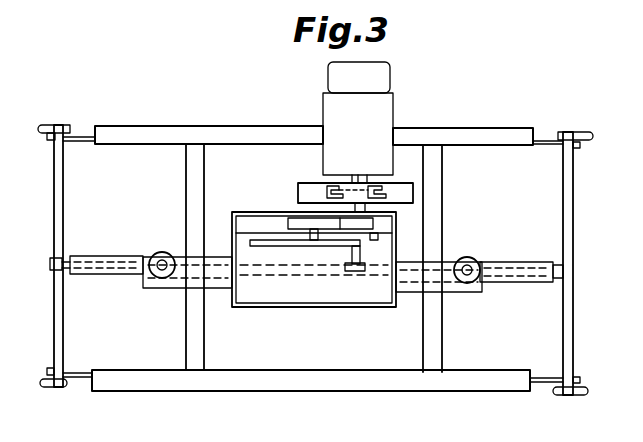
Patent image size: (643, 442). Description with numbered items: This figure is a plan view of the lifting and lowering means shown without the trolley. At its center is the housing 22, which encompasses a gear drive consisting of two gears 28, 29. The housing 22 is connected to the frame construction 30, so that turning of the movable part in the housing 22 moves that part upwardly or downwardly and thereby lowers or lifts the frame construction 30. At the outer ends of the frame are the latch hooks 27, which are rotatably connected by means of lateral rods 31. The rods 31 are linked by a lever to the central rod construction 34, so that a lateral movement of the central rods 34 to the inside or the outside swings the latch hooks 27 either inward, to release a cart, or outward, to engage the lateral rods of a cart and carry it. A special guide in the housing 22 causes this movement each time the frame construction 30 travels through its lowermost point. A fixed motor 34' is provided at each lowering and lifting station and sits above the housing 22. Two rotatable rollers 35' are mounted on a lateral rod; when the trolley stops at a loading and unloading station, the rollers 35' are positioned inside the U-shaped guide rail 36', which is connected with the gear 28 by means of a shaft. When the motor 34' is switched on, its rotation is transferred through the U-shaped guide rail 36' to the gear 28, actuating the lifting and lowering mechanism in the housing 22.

The housing 22 is at (266, 307).
The latch hooks 27 is at (43, 125).
The gear 28 is at (374, 224).
The gear 29 is at (292, 218).
The frame construction 30 is at (493, 391).
The lateral rods 31 is at (55, 191).
The central rod construction 34 is at (306, 289).
The fixed motor 34' is at (383, 122).
The rollers 35' is at (327, 178).
The U-shaped guide rail 36' is at (394, 195).